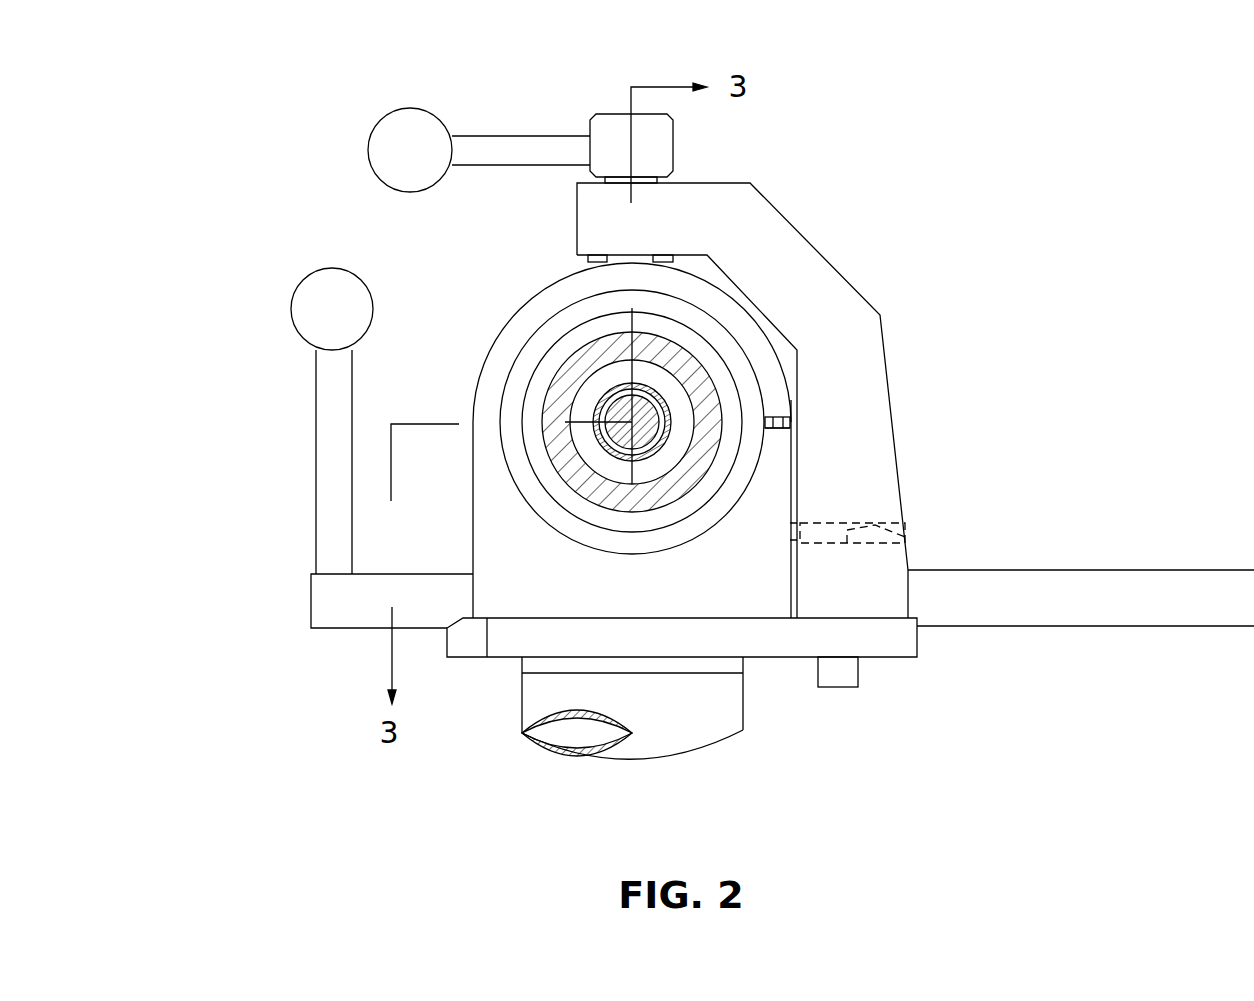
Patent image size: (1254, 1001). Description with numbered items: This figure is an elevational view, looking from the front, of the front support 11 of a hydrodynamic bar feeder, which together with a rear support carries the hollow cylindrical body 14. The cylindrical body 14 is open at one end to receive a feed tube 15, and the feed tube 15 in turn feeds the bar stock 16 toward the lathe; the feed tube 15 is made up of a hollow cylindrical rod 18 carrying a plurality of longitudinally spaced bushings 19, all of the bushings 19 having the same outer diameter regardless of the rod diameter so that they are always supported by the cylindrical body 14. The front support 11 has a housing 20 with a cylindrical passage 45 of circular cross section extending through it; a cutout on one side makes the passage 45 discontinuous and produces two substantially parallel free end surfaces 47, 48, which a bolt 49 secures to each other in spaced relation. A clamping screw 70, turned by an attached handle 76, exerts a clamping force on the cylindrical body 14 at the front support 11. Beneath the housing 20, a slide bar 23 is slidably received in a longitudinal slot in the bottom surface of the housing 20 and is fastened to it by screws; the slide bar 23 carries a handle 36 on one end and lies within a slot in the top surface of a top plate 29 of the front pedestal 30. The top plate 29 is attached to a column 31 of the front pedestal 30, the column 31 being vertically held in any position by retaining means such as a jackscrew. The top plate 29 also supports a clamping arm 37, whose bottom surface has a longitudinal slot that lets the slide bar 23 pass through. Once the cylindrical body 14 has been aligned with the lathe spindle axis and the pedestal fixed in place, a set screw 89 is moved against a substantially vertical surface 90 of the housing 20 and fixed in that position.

The front support 11 is at (852, 143).
The cylindrical body 14 is at (557, 367).
The feed tube 15 is at (632, 508).
The bar stock 16 is at (610, 430).
The hollow cylindrical rod 18 is at (623, 460).
The bushings 19 is at (583, 407).
The housing 20 is at (478, 352).
The slide bar 23 is at (1145, 570).
The top plate 29 is at (888, 657).
The front pedestal 30 is at (508, 711).
The column 31 is at (743, 703).
The handle 36 is at (316, 459).
The clamping arm 37 is at (838, 241).
The cylindrical passage 45 is at (572, 316).
The free end surface 47 is at (770, 418).
The free end surface 48 is at (770, 428).
The bolt 49 is at (797, 423).
The clamping screw 70 is at (609, 114).
The handle 76 is at (415, 108).
The set screw 89 is at (908, 537).
The substantially vertical surface 90 is at (773, 345).